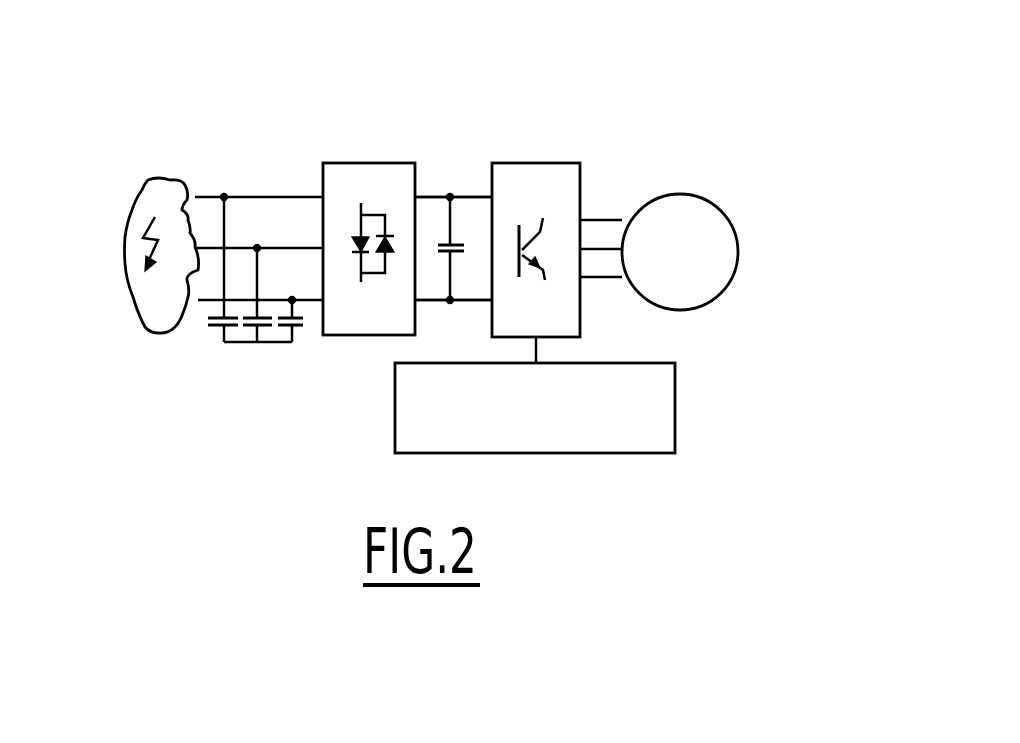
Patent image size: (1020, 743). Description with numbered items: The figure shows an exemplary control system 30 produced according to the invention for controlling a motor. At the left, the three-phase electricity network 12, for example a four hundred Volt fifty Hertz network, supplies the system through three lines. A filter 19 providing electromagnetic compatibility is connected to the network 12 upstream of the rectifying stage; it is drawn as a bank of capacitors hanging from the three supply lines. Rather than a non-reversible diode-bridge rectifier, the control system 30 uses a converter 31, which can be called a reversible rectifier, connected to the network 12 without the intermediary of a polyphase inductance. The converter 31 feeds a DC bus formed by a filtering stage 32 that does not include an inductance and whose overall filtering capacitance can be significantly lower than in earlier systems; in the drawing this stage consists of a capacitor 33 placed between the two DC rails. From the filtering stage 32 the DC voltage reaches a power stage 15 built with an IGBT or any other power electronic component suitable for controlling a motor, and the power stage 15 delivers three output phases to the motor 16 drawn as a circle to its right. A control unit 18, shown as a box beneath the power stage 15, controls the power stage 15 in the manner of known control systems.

The control system 30 is at (225, 128).
The three-phase electricity network 12 is at (160, 187).
The filter 19 is at (245, 343).
The converter 31 is at (362, 173).
The DC link capacitor 33 is at (447, 238).
The filtering stage 32 is at (457, 186).
The power stage 15 is at (537, 172).
The electric motor 16 is at (678, 208).
The control unit 18 is at (407, 393).